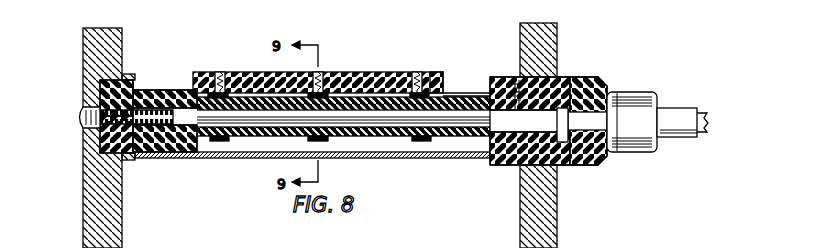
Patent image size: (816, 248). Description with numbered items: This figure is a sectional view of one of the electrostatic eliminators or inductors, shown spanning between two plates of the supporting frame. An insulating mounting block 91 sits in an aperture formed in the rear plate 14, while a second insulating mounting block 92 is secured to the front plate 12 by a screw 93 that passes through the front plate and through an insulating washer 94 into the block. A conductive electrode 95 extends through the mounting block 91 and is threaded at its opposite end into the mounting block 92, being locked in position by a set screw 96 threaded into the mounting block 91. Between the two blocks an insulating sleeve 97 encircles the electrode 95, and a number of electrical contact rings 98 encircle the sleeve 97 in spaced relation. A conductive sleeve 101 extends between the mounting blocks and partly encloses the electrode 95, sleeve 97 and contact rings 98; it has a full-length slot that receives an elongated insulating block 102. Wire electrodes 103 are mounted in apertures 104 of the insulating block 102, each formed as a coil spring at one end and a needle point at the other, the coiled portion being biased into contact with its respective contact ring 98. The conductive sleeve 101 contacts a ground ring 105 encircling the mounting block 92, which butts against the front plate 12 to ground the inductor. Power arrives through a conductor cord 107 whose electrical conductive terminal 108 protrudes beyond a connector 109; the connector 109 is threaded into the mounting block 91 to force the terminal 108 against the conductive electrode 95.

The front plate 12 is at (85, 208).
The rear plate 14 is at (560, 212).
The mounting block 91 is at (593, 77).
The mounting block 92 is at (147, 96).
The screw 93 is at (80, 118).
The washer 94 is at (116, 78).
The conductive electrode 95 is at (168, 156).
The set screw 96 is at (555, 80).
The sleeve 97 is at (256, 136).
The electrical contact rings 98 is at (219, 141).
The conductive sleeve 101 is at (398, 158).
The insulating block 102 is at (371, 62).
The wire electrodes 103 is at (416, 73).
The apertures 104 is at (426, 73).
The ground ring 105 is at (126, 160).
The conductor cord 107 is at (670, 109).
The electrical conductive terminal 108 is at (586, 164).
The connector 109 is at (637, 94).